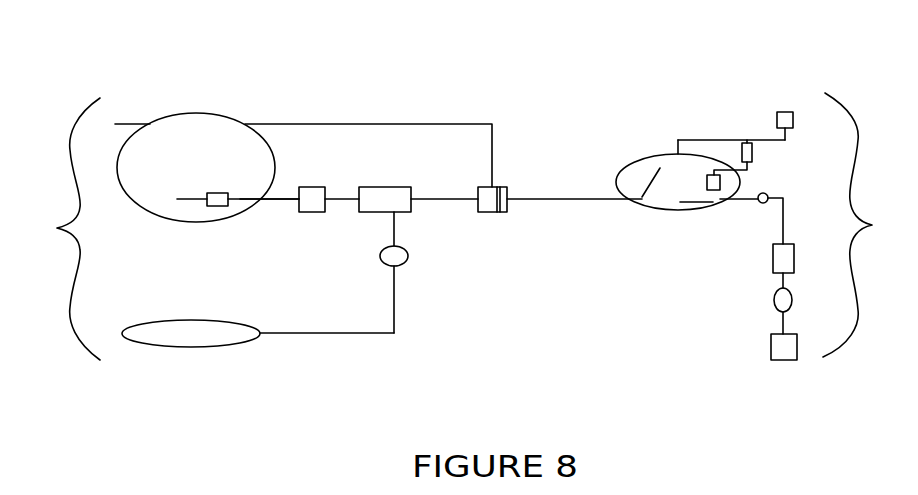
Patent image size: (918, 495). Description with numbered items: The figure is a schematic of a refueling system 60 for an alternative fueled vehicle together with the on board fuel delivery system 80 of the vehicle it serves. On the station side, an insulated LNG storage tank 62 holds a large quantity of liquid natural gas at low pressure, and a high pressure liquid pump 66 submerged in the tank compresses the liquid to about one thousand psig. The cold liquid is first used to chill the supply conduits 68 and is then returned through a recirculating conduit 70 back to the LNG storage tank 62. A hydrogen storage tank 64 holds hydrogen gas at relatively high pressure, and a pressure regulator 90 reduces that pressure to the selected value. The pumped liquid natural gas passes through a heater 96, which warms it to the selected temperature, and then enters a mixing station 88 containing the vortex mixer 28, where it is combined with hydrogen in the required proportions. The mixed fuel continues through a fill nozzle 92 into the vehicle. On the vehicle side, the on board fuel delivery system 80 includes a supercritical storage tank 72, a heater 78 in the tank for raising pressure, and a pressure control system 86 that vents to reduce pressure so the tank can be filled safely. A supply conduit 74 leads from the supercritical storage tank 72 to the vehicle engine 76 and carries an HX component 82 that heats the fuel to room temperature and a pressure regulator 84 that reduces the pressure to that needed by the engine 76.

The refueling system 60 is at (61, 229).
The LNG storage tank 62 is at (193, 225).
The high pressure liquid pump 66 is at (231, 207).
The supply conduits 68 is at (285, 199).
The heater 96 is at (320, 187).
The vortex mixer 28 is at (370, 202).
The mixing station 88 is at (410, 187).
The recirculating conduit 70 is at (460, 124).
The fill nozzle 92 is at (507, 187).
The pressure regulator 90 is at (409, 255).
The hydrogen storage tank 64 is at (247, 346).
The on board fuel delivery system 80 is at (866, 225).
The supercritical storage tank 72 is at (643, 207).
The pressure control system 86 is at (750, 135).
The heater 78 is at (710, 174).
The supply conduit 74 is at (784, 227).
The HX component 82 is at (773, 262).
The pressure regulator 84 is at (775, 302).
The vehicle engine 76 is at (770, 343).